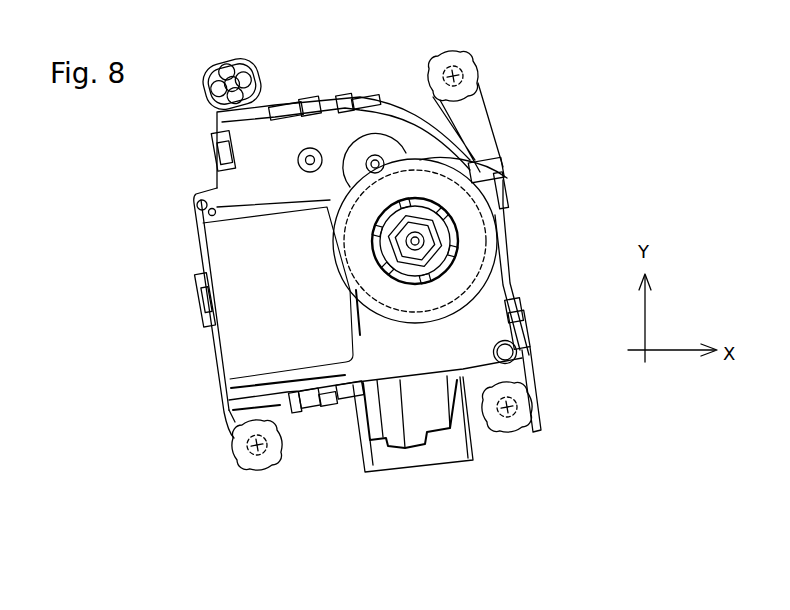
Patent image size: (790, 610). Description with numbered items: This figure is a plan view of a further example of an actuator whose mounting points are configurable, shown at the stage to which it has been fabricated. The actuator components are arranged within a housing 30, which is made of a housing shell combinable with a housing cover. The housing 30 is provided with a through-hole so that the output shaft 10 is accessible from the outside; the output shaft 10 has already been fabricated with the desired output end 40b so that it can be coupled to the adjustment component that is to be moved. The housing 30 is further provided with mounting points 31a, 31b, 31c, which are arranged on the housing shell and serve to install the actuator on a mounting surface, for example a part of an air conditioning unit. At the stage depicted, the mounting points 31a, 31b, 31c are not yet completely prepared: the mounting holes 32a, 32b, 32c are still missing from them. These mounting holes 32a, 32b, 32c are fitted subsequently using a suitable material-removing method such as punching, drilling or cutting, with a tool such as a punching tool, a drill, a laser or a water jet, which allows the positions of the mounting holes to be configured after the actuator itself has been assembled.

The output shaft 10 is at (455, 257).
The housing 30 is at (248, 180).
The mounting point 31a is at (228, 478).
The mounting point 31b is at (545, 432).
The mounting point 31c is at (502, 84).
The mounting hole 32a is at (257, 442).
The mounting hole 32b is at (507, 408).
The mounting hole 32c is at (456, 76).
The output end 40b is at (422, 239).